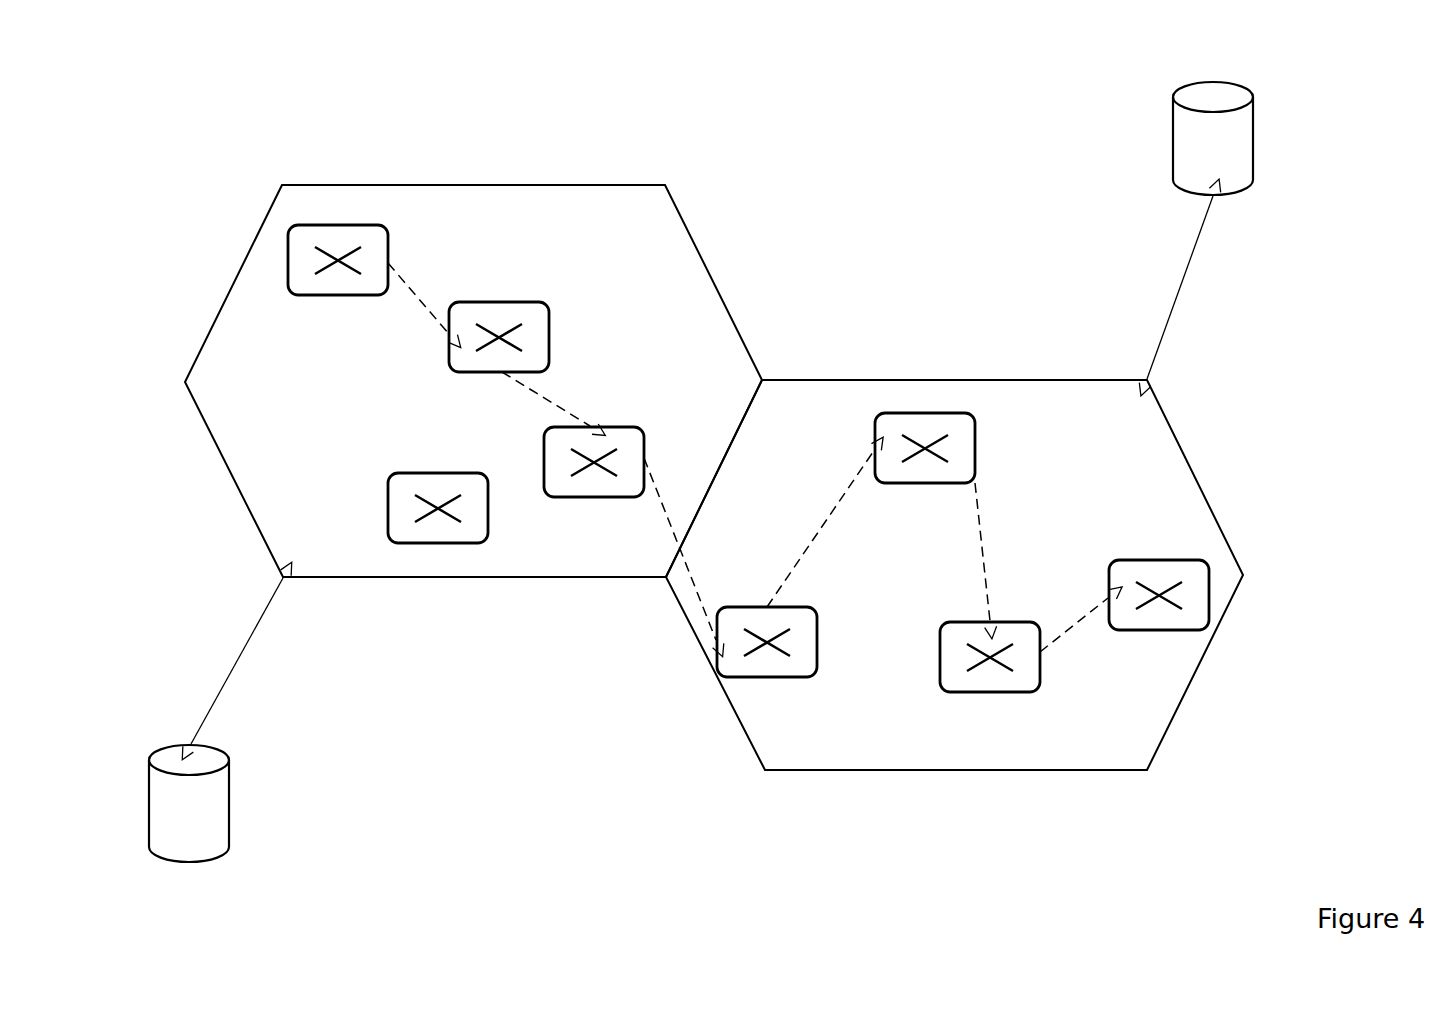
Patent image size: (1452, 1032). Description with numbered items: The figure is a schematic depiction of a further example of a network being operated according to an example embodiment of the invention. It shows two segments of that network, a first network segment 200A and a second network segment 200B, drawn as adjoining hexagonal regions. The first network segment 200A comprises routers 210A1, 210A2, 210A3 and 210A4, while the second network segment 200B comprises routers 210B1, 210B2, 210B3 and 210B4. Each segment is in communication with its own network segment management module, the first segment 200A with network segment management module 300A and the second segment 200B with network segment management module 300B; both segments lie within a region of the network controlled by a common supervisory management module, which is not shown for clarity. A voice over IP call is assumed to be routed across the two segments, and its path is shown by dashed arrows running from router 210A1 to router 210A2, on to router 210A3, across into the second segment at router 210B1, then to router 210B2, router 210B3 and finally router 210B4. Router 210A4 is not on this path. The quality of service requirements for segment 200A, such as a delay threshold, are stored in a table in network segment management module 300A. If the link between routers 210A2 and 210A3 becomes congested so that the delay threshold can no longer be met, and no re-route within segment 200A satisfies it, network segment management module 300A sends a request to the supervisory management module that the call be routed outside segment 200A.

The network segment 200A is at (478, 178).
The network segment 200B is at (1204, 473).
The router 210A1 is at (288, 257).
The router 210A2 is at (501, 303).
The router 210A3 is at (595, 499).
The router 210A4 is at (386, 505).
The router 210B1 is at (748, 679).
The router 210B2 is at (954, 411).
The router 210B3 is at (990, 694).
The router 210B4 is at (1211, 596).
The network segment management module 300A is at (231, 805).
The network segment management module 300B is at (1171, 140).